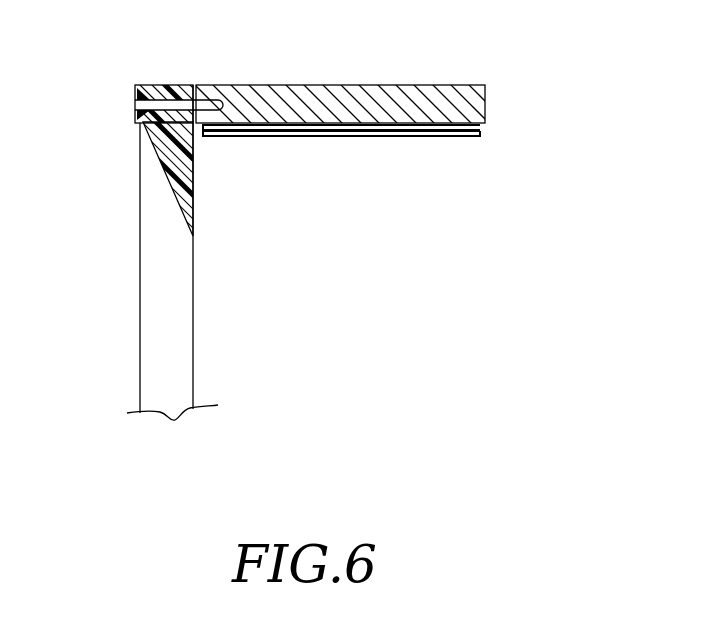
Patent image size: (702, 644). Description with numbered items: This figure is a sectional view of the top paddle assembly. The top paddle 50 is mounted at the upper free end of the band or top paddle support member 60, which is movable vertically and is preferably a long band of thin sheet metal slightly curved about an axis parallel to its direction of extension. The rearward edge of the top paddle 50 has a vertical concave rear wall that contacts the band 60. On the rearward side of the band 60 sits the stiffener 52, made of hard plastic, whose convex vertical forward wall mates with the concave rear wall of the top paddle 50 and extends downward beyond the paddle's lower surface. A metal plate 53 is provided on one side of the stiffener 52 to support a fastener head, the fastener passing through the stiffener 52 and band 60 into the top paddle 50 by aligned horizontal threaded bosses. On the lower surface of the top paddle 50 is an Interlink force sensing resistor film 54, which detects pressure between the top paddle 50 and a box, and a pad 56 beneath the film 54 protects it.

The top paddle 50 is at (335, 84).
The stiffener 52 is at (155, 85).
The metal plate 53 is at (140, 85).
The film 54 is at (480, 127).
The pad 56 is at (480, 133).
The top paddle support member 60 is at (140, 273).